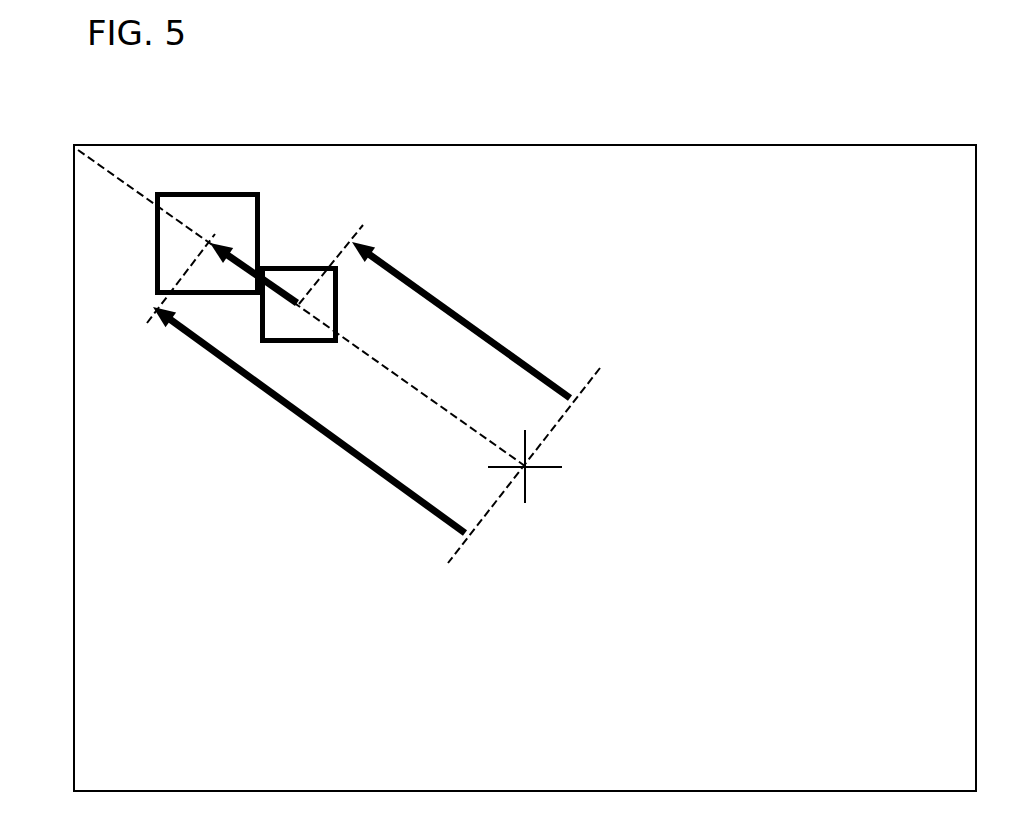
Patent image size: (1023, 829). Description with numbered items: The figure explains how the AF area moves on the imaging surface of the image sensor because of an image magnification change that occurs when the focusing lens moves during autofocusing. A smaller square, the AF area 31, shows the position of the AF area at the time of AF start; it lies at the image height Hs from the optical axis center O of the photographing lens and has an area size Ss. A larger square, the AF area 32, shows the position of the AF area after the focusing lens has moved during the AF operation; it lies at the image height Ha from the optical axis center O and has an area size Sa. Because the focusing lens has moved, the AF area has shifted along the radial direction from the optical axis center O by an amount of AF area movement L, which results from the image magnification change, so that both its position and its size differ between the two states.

The AF area 32 is at (182, 192).
The AF area 31 is at (300, 265).
The amount of AF area movement L is at (243, 256).
The image height Hs is at (445, 305).
The image height Ha is at (365, 464).
The optical axis center O is at (525, 467).
The area size Ss is at (278, 343).
The area size Sa is at (197, 295).